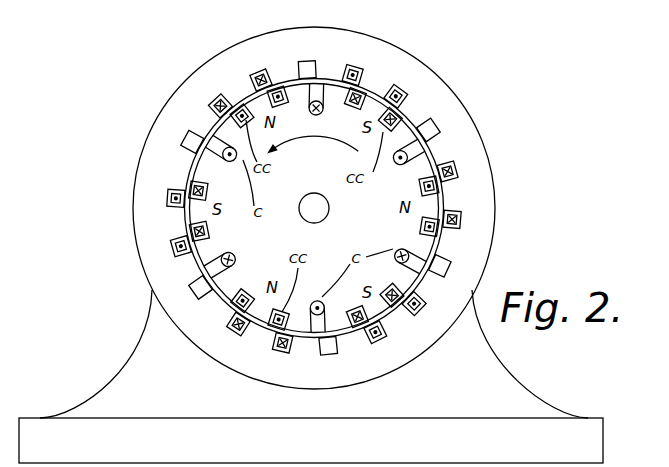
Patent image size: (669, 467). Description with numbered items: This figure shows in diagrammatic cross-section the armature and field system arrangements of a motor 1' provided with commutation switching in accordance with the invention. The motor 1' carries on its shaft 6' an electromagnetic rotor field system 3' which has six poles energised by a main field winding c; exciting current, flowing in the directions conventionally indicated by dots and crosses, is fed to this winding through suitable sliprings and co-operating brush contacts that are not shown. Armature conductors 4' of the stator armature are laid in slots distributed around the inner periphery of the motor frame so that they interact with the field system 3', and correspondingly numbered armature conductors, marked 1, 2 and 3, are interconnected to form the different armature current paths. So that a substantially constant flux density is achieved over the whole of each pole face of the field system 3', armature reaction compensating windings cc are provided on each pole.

The first phase coil 1 is at (312, 209).
The second phase coil 2 is at (189, 65).
The third phase coil / pole tooth 3 is at (314, 208).
The motor 1' is at (314, 194).
The electromagnetic rotor field system 3' is at (450, 157).
The armature conductors 4' is at (263, 132).
The shaft 6' is at (322, 217).